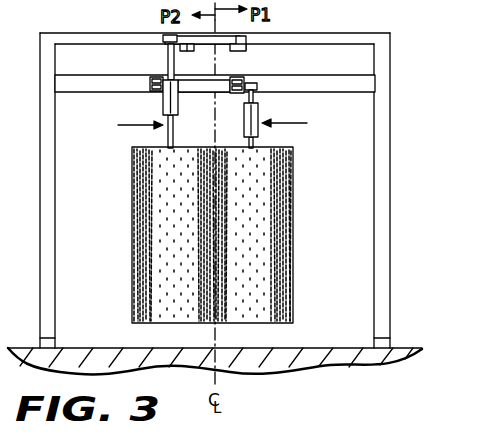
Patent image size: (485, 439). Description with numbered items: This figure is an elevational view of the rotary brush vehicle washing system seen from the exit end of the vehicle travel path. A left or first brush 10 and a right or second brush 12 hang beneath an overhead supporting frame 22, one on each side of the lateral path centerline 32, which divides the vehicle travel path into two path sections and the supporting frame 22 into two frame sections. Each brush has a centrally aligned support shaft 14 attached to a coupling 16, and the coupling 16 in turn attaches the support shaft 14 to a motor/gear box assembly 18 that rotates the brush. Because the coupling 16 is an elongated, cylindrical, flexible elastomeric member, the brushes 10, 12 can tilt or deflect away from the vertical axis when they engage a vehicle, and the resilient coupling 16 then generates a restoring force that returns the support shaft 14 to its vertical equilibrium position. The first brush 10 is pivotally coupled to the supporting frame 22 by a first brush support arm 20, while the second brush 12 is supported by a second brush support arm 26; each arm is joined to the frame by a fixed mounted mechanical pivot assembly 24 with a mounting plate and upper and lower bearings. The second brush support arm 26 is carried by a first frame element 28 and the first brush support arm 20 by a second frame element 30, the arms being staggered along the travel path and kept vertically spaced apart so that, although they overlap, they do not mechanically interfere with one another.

The first brush 10 is at (181, 199).
The second brush 12 is at (257, 199).
The support shaft 14 is at (174, 138).
The coupling 16 is at (163, 113).
The motor/gear box assembly 18 is at (184, 50).
The first brush support arm 20 is at (166, 36).
The supporting frame 22 is at (97, 25).
The pivot assembly 24 is at (152, 78).
The second brush support arm 26 is at (182, 94).
The first frame element 28 is at (98, 76).
The second frame element 30 is at (49, 32).
The path centerline 32 is at (218, 348).